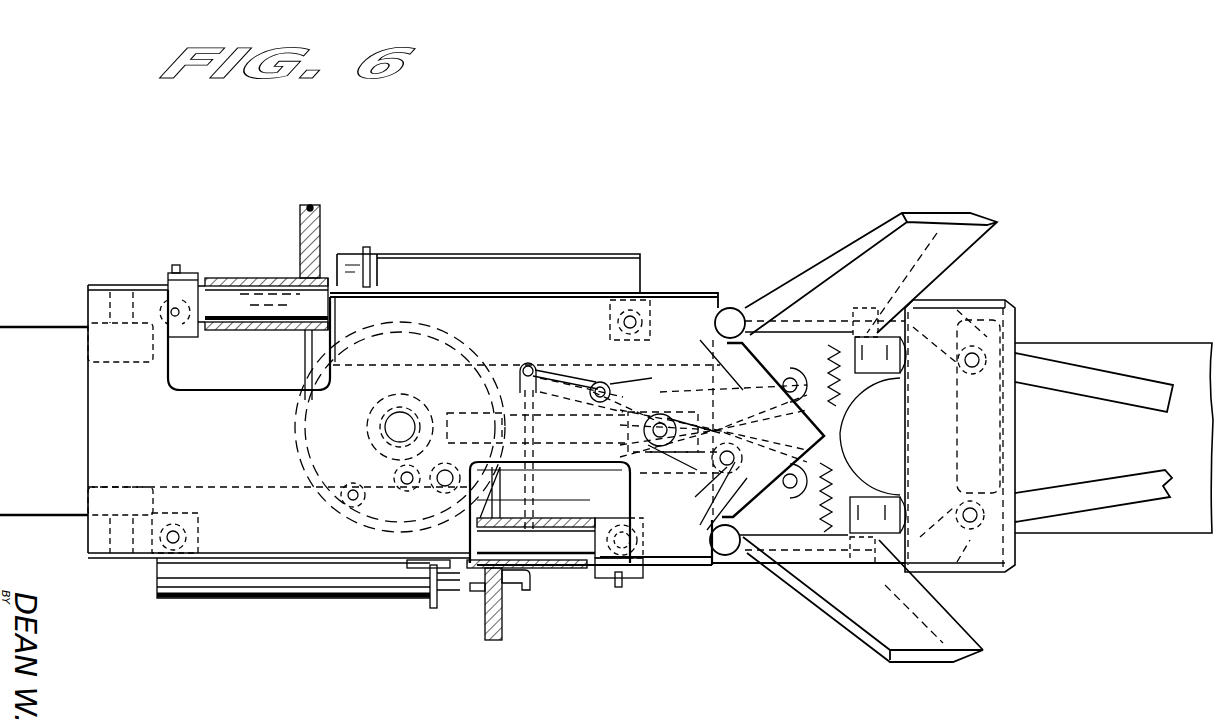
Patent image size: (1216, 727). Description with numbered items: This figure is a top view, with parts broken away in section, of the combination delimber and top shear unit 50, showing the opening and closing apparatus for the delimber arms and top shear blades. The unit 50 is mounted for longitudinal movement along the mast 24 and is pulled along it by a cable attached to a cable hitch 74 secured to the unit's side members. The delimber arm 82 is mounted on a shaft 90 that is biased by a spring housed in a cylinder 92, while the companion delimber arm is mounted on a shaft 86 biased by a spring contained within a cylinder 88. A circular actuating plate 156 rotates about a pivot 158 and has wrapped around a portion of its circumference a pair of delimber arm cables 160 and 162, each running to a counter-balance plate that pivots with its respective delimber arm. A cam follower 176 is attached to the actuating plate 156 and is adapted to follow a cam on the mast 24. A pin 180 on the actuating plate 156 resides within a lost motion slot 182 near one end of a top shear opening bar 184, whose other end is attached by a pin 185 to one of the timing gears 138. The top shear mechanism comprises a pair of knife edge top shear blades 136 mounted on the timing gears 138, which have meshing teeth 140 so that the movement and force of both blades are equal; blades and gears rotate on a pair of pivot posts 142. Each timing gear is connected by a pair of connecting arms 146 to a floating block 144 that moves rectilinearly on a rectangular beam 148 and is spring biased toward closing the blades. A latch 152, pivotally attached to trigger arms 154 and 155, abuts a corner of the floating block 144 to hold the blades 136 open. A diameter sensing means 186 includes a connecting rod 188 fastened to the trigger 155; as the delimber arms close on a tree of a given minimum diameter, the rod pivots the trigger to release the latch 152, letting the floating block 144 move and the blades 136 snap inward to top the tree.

The combination delimber and top shear unit 50 is at (565, 157).
The delimber arm cable 162 is at (313, 204).
The delimber arm 82 is at (322, 207).
The shaft 90 is at (248, 282).
The cylinder 92 is at (606, 255).
The actuating plate 156 is at (425, 343).
The pivot 158 is at (385, 413).
The rectangular beam 148 is at (470, 413).
The trigger arm 155 is at (533, 366).
The trigger arm 154 is at (558, 382).
The latch 152 is at (620, 402).
The floating block 144 is at (657, 412).
The connecting arms 146 is at (703, 434).
The top shear opening bar 184 is at (638, 482).
The pin 185 is at (697, 494).
The pivot posts 142 is at (762, 264).
The top shear blades 136 is at (927, 232).
The timing gears 138 is at (810, 366).
The meshing teeth 140 is at (830, 480).
The cam follower 176 is at (362, 452).
The lost motion slot 182 is at (420, 478).
The pin 180 is at (438, 505).
The connecting rod 188 is at (533, 505).
The shaft 86 is at (573, 570).
The delimber arm cable 160 is at (487, 645).
The diameter sensing means 186 is at (528, 598).
The cylinder 88 is at (290, 590).
The cable hitch 74 is at (1098, 390).
The mast 24 is at (1214, 332).